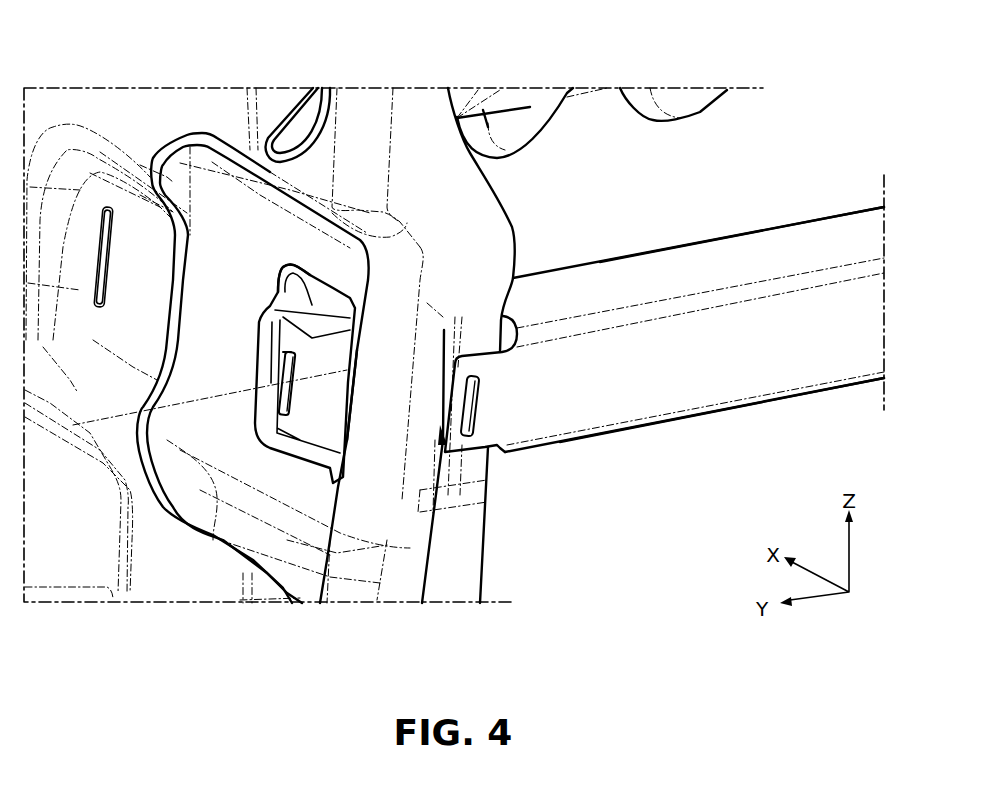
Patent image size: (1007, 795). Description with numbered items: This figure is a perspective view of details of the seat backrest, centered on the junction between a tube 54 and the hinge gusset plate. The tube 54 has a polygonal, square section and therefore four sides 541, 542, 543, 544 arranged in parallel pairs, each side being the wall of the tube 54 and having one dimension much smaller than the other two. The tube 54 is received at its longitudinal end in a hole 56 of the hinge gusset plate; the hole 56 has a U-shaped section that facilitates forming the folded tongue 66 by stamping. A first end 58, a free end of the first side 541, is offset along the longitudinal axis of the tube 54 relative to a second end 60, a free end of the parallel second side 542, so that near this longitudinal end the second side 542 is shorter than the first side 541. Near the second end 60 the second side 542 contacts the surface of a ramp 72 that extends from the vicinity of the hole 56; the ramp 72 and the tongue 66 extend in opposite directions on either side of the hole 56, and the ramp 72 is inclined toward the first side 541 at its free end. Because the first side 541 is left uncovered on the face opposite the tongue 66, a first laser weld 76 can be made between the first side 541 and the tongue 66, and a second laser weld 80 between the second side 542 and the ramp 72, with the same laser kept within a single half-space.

The tube 54 is at (800, 397).
The first side 541 is at (313, 413).
The second side 542 is at (617, 408).
The third side 543 is at (713, 252).
The fourth side 544 is at (328, 458).
The hole 56 is at (308, 268).
The first end 58 is at (268, 398).
The second end 60 is at (440, 433).
The tongue 66 is at (270, 320).
The ramp 72 is at (470, 467).
The first laser weld 76 is at (270, 408).
The second laser weld 80 is at (477, 410).